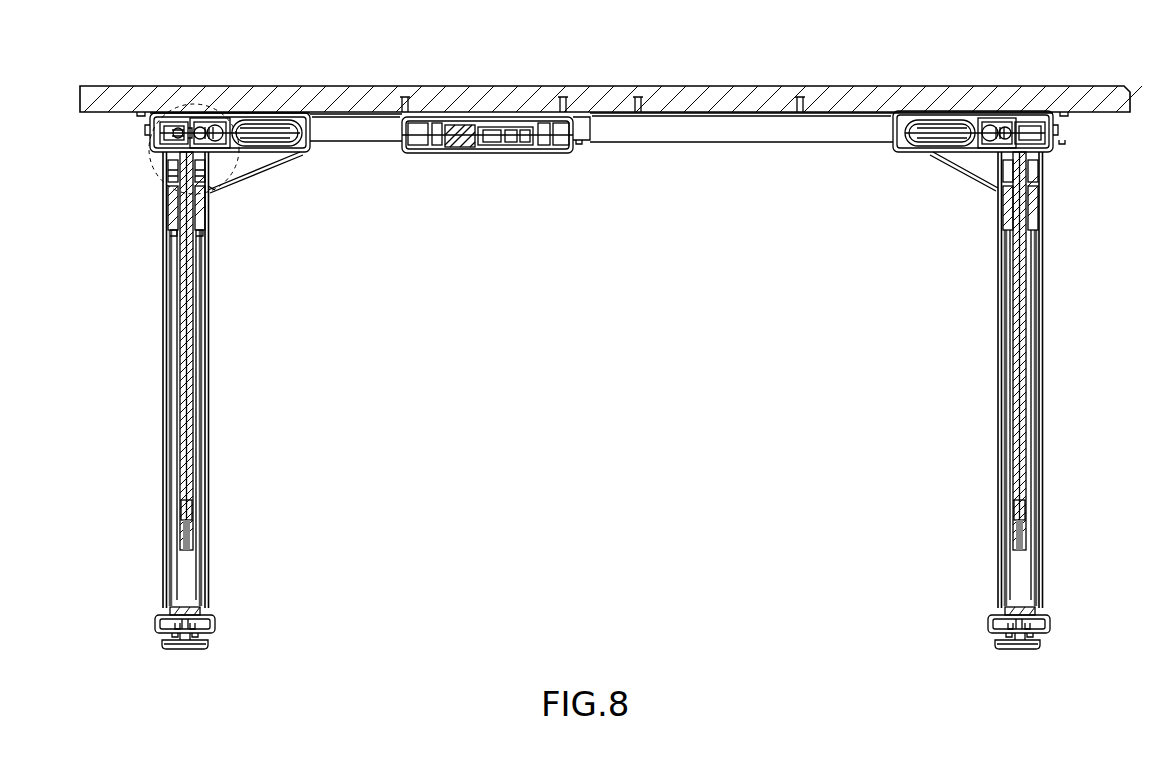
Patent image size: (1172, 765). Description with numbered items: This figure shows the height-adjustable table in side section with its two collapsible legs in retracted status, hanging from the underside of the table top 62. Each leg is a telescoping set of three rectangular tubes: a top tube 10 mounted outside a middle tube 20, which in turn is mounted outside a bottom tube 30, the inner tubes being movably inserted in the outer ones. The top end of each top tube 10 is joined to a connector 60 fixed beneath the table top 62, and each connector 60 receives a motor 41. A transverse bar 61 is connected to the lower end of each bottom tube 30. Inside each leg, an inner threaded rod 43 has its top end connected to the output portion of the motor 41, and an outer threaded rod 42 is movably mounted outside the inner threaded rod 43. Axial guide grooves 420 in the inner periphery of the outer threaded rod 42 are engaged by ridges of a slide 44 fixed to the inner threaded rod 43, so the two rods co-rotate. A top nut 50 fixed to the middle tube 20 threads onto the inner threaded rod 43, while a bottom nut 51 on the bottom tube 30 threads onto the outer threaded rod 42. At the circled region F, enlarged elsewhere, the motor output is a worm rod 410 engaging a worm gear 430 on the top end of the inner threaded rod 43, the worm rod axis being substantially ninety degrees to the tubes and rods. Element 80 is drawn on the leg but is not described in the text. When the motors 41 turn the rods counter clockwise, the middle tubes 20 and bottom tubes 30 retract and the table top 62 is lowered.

The top tube 10 is at (208, 224).
The middle tube 20 is at (208, 257).
The bottom tube 30 is at (208, 303).
The motor 41 is at (295, 152).
The outer threaded rod 42 is at (180, 327).
The inner threaded rod 43 is at (180, 362).
The slide 44 is at (183, 513).
The top nut 50 is at (163, 183).
The bottom nut 51 is at (167, 217).
The connector 60 is at (312, 146).
The transverse bar 61 is at (216, 623).
The table top 62 is at (317, 96).
The sleeve 80 is at (167, 228).
The worm rod 410 is at (172, 122).
The guide grooves 420 is at (180, 542).
The worm gear 430 is at (167, 123).
The circled F is at (213, 188).